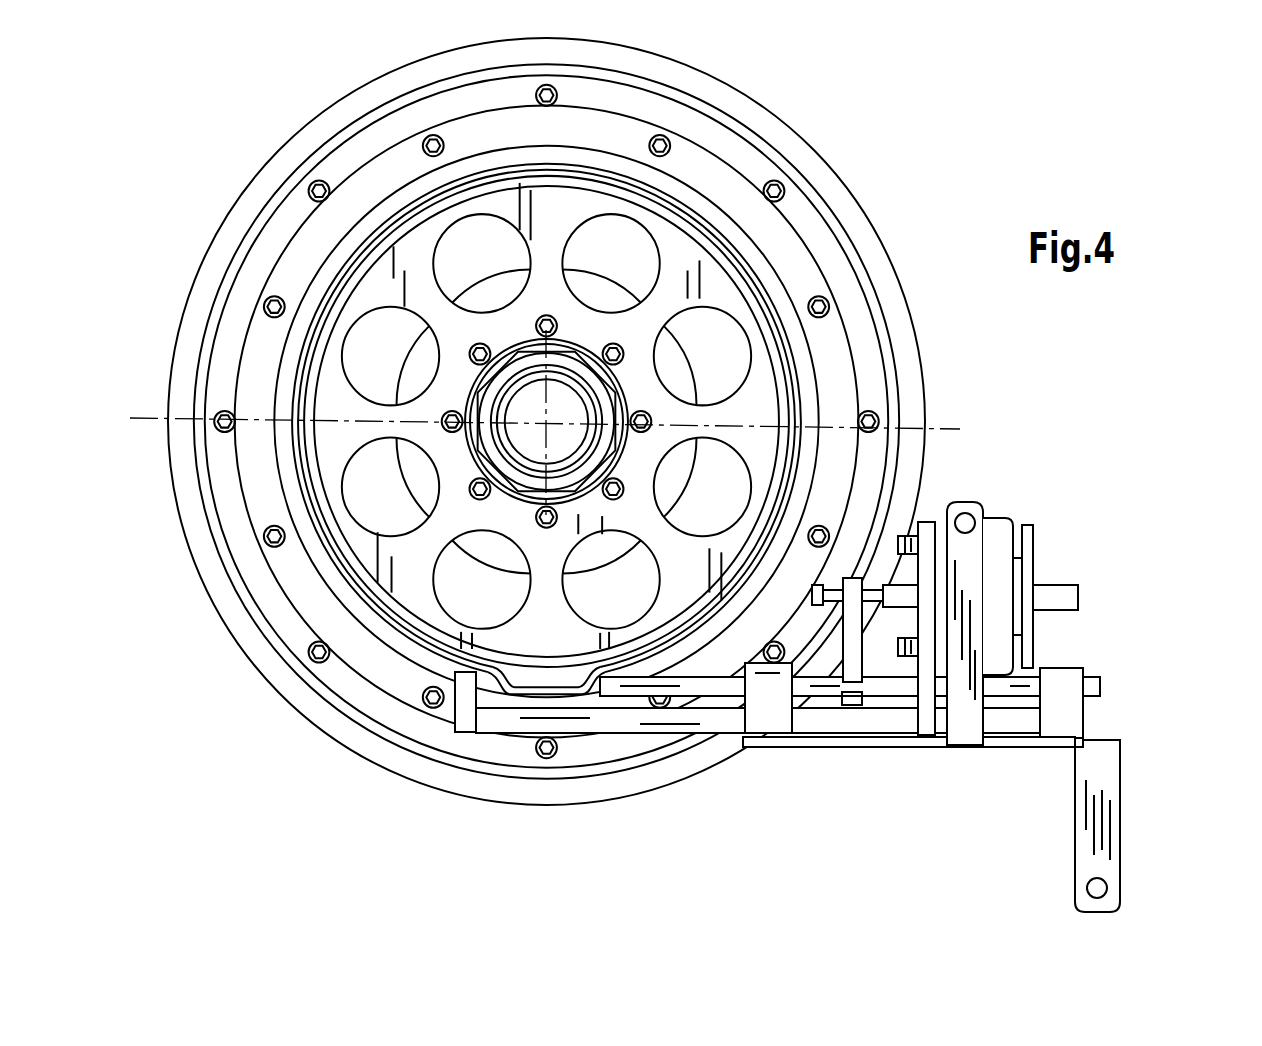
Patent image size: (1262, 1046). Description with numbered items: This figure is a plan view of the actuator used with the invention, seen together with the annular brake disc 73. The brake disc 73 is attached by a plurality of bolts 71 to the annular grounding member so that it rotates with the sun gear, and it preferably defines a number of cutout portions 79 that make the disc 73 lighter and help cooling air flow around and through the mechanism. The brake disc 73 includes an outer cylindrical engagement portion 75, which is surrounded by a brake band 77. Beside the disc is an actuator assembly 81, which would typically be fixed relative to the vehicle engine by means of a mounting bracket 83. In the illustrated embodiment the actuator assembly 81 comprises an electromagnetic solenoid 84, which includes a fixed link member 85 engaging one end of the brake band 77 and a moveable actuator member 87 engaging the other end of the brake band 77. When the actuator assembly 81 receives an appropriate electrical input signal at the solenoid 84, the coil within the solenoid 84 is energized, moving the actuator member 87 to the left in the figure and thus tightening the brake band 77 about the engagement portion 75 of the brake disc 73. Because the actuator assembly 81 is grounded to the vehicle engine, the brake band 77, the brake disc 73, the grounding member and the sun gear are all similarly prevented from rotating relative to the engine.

The bolts 71 is at (609, 343).
The brake disc 73 is at (568, 205).
The outer cylindrical engagement portion 75 is at (298, 378).
The brake band 77 is at (757, 258).
The cutout portions 79 is at (363, 318).
The actuator assembly 81 is at (841, 681).
The mounting bracket 83 is at (1095, 825).
The electromagnetic solenoid 84 is at (1000, 530).
The fixed link member 85 is at (471, 712).
The moveable actuator member 87 is at (707, 683).